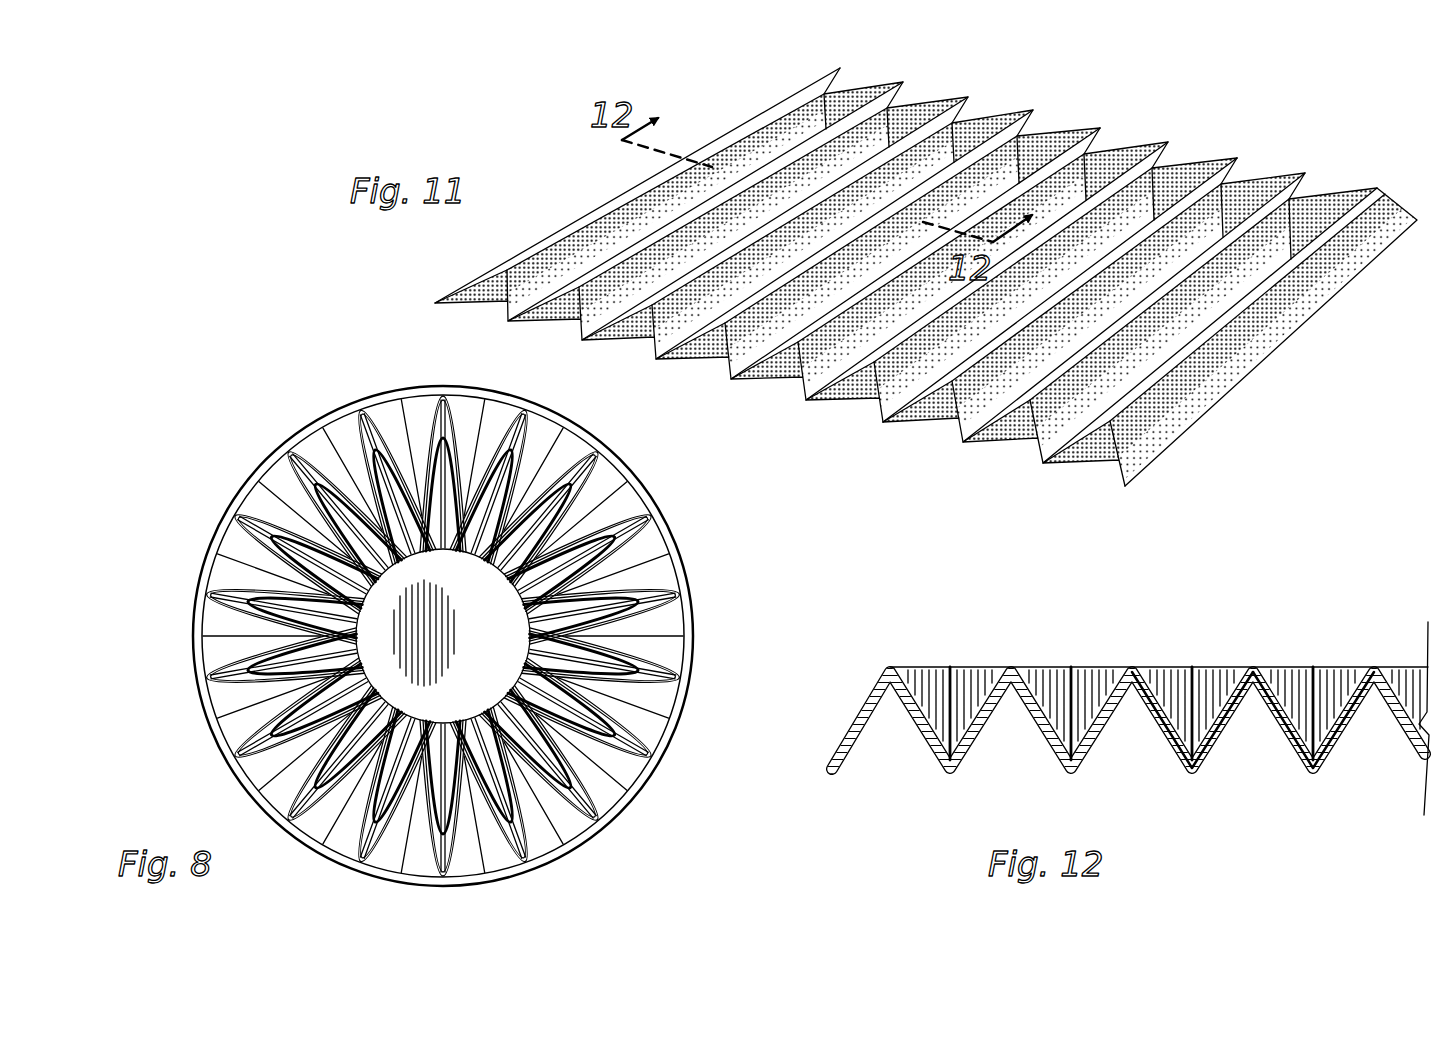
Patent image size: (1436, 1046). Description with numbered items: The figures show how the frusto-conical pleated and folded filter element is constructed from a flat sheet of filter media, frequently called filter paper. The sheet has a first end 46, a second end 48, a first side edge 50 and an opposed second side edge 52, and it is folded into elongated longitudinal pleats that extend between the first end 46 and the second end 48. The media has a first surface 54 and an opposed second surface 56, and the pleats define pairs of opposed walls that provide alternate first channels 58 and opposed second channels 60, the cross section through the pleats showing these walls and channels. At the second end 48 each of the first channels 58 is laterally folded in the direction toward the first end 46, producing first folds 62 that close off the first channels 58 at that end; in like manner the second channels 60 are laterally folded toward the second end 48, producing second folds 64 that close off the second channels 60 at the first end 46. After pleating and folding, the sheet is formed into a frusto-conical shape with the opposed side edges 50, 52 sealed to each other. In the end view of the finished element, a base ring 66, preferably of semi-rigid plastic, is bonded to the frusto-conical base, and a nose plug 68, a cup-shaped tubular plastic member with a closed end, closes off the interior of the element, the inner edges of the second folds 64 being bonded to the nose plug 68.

In FIG. 11, the first end 46 is at (885, 424).
In FIG. 11, the second end 48 is at (1035, 112).
In FIG. 11, the first side edge 50 is at (558, 232).
In FIG. 12, the first side edge 50 is at (832, 778).
In FIG. 11, the second side edge 52 is at (1243, 378).
In FIG. 11, the first surface 54 is at (1148, 357).
In FIG. 12, the first surface 54 is at (1043, 697).
In FIG. 12, the second surface 56 is at (1098, 752).
In FIG. 11, the first channels 58 is at (1197, 150).
In FIG. 8, the first channels 58 is at (633, 545).
In FIG. 12, the first channels 58 is at (1225, 680).
In FIG. 12, the second channels 60 is at (1373, 733).
In FIG. 11, the first folds 62 is at (1307, 205).
In FIG. 8, the first folds 62 is at (598, 466).
In FIG. 12, the first folds 62 is at (1315, 695).
In FIG. 11, the second folds 64 is at (1095, 467).
In FIG. 8, the second folds 64 is at (682, 620).
In FIG. 8, the base ring 66 is at (680, 562).
In FIG. 8, the nose plug 68 is at (494, 668).